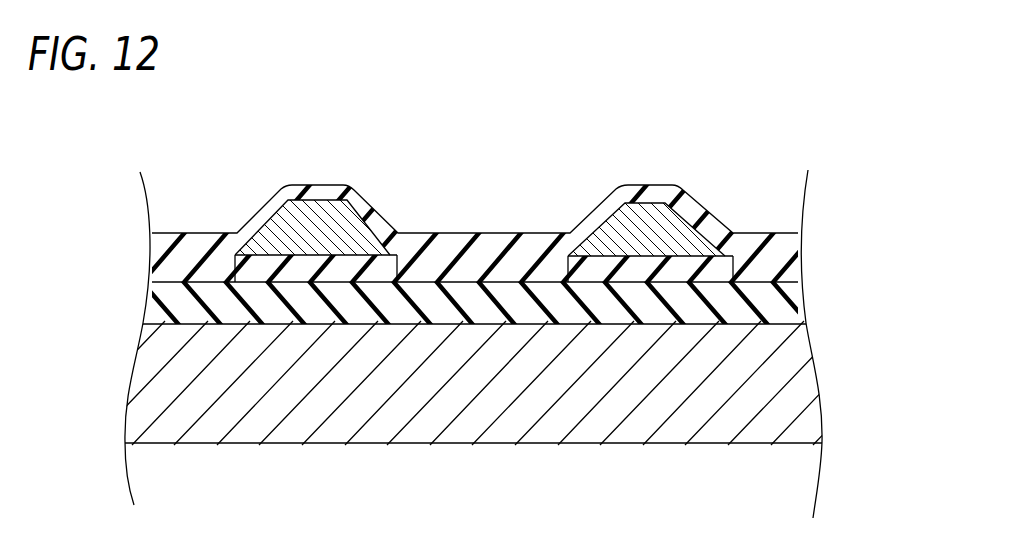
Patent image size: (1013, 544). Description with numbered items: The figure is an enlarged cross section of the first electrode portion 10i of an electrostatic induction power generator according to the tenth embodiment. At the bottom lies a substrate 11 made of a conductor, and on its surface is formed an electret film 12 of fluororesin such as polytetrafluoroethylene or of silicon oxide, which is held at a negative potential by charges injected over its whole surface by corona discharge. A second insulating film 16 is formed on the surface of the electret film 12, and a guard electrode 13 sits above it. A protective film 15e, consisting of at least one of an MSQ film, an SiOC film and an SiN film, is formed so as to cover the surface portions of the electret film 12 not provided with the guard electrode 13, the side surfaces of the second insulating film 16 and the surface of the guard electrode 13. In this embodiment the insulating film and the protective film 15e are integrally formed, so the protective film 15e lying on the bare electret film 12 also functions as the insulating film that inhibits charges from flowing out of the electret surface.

The first electrode portion 10i is at (799, 124).
The substrate 11 is at (151, 397).
The electret film 12 is at (153, 305).
The guard electrode 13 is at (322, 215).
The protective film 15e is at (483, 250).
The second insulating film 16 is at (377, 277).